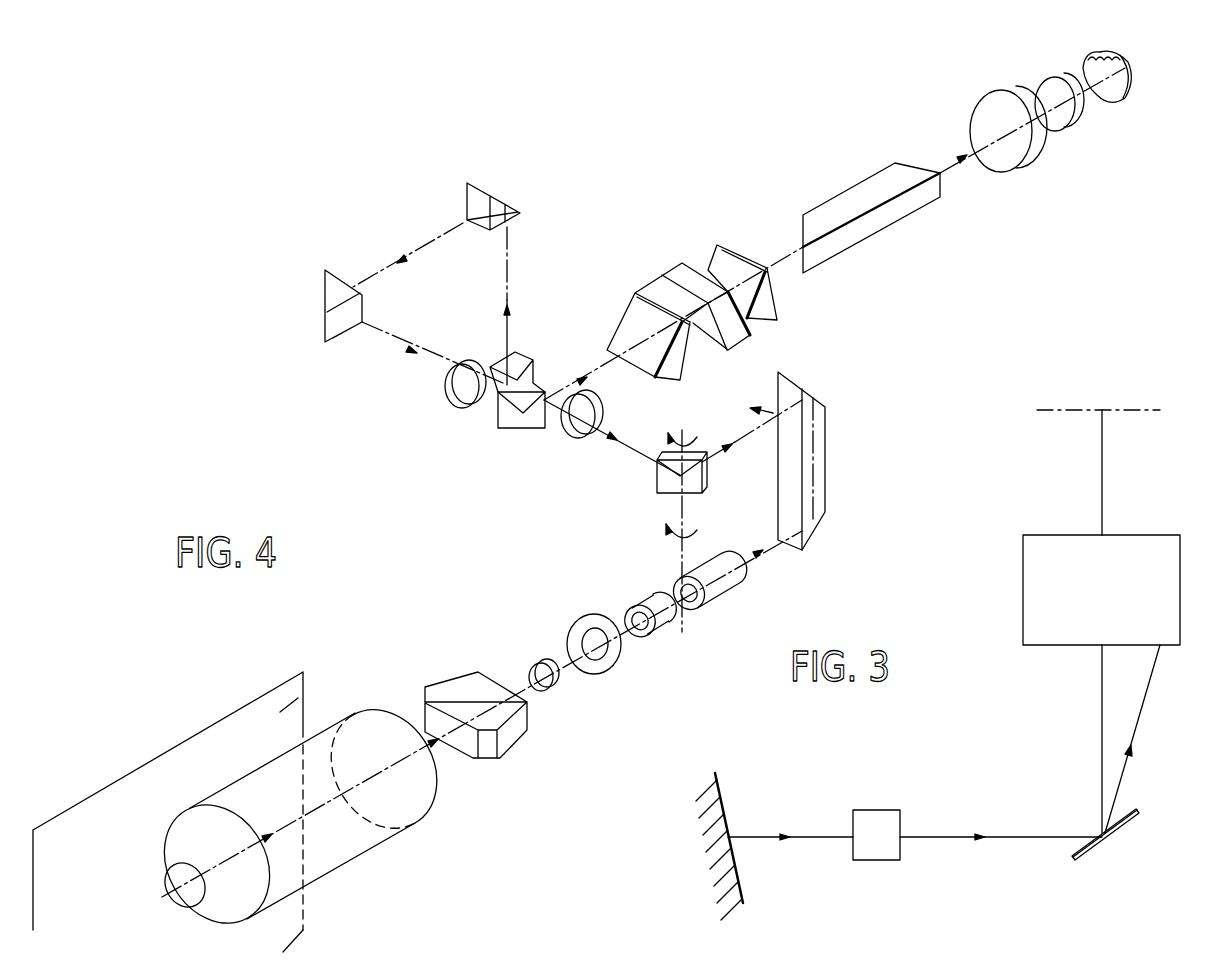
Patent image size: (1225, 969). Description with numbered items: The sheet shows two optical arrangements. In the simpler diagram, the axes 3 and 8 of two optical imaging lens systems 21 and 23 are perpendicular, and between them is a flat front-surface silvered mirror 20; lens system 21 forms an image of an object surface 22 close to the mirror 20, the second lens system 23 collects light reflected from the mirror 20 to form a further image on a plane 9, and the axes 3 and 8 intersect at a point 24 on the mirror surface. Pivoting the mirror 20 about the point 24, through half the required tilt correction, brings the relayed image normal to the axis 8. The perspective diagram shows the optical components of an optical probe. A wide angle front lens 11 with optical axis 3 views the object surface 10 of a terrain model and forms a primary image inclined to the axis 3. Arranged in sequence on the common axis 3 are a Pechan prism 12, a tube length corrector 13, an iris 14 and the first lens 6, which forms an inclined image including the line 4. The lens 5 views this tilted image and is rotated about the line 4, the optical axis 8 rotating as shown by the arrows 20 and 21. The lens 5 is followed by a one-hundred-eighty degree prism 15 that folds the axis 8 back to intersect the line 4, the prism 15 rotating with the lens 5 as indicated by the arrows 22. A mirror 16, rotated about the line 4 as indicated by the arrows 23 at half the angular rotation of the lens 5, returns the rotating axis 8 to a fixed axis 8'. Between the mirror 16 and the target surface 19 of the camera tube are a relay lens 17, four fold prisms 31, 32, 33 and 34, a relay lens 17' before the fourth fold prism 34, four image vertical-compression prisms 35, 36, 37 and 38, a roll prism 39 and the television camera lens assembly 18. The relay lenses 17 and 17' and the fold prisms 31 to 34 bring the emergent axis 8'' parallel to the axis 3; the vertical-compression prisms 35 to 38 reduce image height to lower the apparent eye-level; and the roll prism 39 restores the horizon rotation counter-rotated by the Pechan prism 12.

In FIG. 4, the optical axis 3 is at (218, 868).
In FIG. 3, the optical axis 3 is at (762, 836).
In FIG. 4, the line 4 is at (678, 557).
In FIG. 4, the lens 5 is at (718, 596).
In FIG. 4, the first lens 6 is at (666, 632).
In FIG. 4, the optical axis 8 is at (757, 469).
In FIG. 3, the optical axis 8 is at (1110, 621).
In FIG. 4, the fixed optical axis 8' is at (612, 437).
In FIG. 4, the emergent optical axis 8'' is at (834, 234).
In FIG. 3, the plane 9 is at (1127, 408).
In FIG. 4, the object surface 10 is at (306, 695).
In FIG. 4, the wide angle front lens 11 is at (378, 845).
In FIG. 4, the Pechan prism 12 is at (455, 688).
In FIG. 4, the tube length corrector 13 is at (543, 663).
In FIG. 4, the iris 14 is at (582, 624).
In FIG. 4, the 180° prism 15 is at (827, 418).
In FIG. 4, the mirror 16 is at (660, 484).
In FIG. 4, the relay lens 17 is at (597, 407).
In FIG. 4, the relay lens 17' is at (477, 420).
In FIG. 4, the television camera lens assembly 18 is at (1075, 130).
In FIG. 4, the camera tube target surface 19 is at (1125, 97).
In FIG. 4, the flat front-surface silvered mirror 20 is at (693, 533).
In FIG. 3, the flat front-surface silvered mirror 20 is at (1087, 846).
In FIG. 4, the lens system 21 is at (742, 552).
In FIG. 3, the lens system 21 is at (876, 835).
In FIG. 4, the object surface 22 is at (848, 455).
In FIG. 3, the object surface 22 is at (736, 870).
In FIG. 4, the lens system 23 is at (692, 440).
In FIG. 3, the lens system 23 is at (1101, 590).
In FIG. 3, the point 24 is at (1108, 836).
In FIG. 4, the fold prism 31 is at (520, 353).
In FIG. 4, the fold prism 32 is at (516, 217).
In FIG. 4, the fold prism 33 is at (333, 322).
In FIG. 4, the fold prism 34 is at (503, 415).
In FIG. 4, the image vertical-compression prism 35 is at (638, 307).
In FIG. 4, the image vertical-compression prism 36 is at (723, 350).
In FIG. 4, the image vertical-compression prism 37 is at (753, 337).
In FIG. 4, the image vertical-compression prism 38 is at (723, 250).
In FIG. 4, the roll prism 39 is at (895, 218).